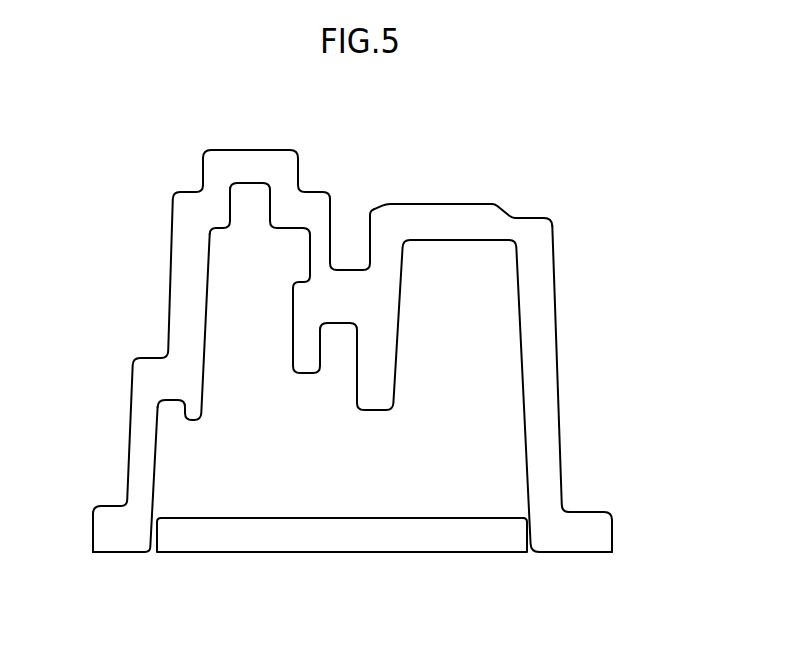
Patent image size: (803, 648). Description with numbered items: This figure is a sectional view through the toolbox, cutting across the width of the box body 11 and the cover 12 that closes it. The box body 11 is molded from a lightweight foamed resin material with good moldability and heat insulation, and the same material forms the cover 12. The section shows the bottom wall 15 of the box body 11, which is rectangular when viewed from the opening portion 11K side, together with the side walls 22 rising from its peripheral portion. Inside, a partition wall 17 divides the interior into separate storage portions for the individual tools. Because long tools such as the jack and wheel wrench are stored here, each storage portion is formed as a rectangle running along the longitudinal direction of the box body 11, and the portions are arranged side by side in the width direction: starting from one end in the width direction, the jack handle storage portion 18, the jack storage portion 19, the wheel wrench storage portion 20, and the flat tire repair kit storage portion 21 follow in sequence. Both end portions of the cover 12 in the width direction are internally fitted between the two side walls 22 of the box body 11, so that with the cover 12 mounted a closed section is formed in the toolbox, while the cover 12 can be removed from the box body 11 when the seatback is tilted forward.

The box body 11 is at (627, 151).
The opening portion 11K is at (428, 499).
The cover 12 is at (333, 545).
The bottom wall 15 is at (445, 220).
The partition wall 17 is at (378, 370).
The jack handle storage portion 18 is at (174, 431).
The jack storage portion 19 is at (234, 257).
The wheel wrench storage portion 20 is at (338, 369).
The flat tire repair kit storage portion 21 is at (489, 288).
The side walls 22 is at (186, 268).